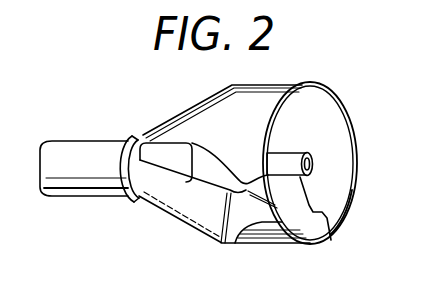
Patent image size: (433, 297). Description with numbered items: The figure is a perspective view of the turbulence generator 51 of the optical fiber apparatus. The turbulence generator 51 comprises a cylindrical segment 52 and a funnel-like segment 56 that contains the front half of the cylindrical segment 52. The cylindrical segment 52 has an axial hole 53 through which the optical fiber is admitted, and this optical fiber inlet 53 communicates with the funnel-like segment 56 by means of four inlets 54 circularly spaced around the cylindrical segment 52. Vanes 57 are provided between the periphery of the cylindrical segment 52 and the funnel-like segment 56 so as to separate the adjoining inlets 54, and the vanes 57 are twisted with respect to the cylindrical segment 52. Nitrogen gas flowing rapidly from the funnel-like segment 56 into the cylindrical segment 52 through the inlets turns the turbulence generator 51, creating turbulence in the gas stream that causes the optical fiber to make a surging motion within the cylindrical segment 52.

The turbulence generator 51 is at (335, 87).
The cylindrical segment 52 is at (331, 240).
The axial hole 53 is at (312, 163).
The inlets 54 is at (165, 160).
The funnel-like segment 56 is at (342, 218).
The vanes 57 is at (205, 222).